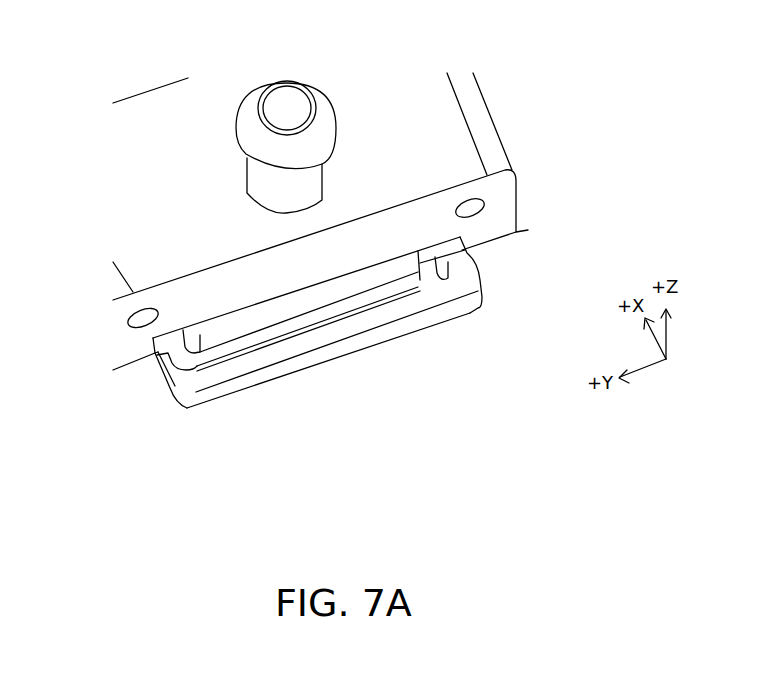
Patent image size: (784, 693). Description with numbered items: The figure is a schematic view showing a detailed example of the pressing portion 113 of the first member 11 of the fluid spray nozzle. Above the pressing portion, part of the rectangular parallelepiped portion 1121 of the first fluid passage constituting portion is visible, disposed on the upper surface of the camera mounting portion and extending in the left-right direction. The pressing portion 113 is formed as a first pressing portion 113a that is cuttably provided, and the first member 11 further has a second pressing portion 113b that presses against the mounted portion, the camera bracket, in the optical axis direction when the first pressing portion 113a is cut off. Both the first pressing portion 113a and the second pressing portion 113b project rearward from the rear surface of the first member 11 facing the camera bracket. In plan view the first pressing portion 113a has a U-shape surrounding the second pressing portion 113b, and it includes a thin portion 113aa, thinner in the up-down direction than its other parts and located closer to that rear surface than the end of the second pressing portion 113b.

The first member 11 is at (410, 77).
The rectangular parallelepiped portion 1121 is at (150, 120).
The pressing portion 113 is at (257, 296).
The first pressing portion 113a is at (340, 332).
The thin portion 113aa is at (158, 356).
The second pressing portion 113b is at (403, 262).